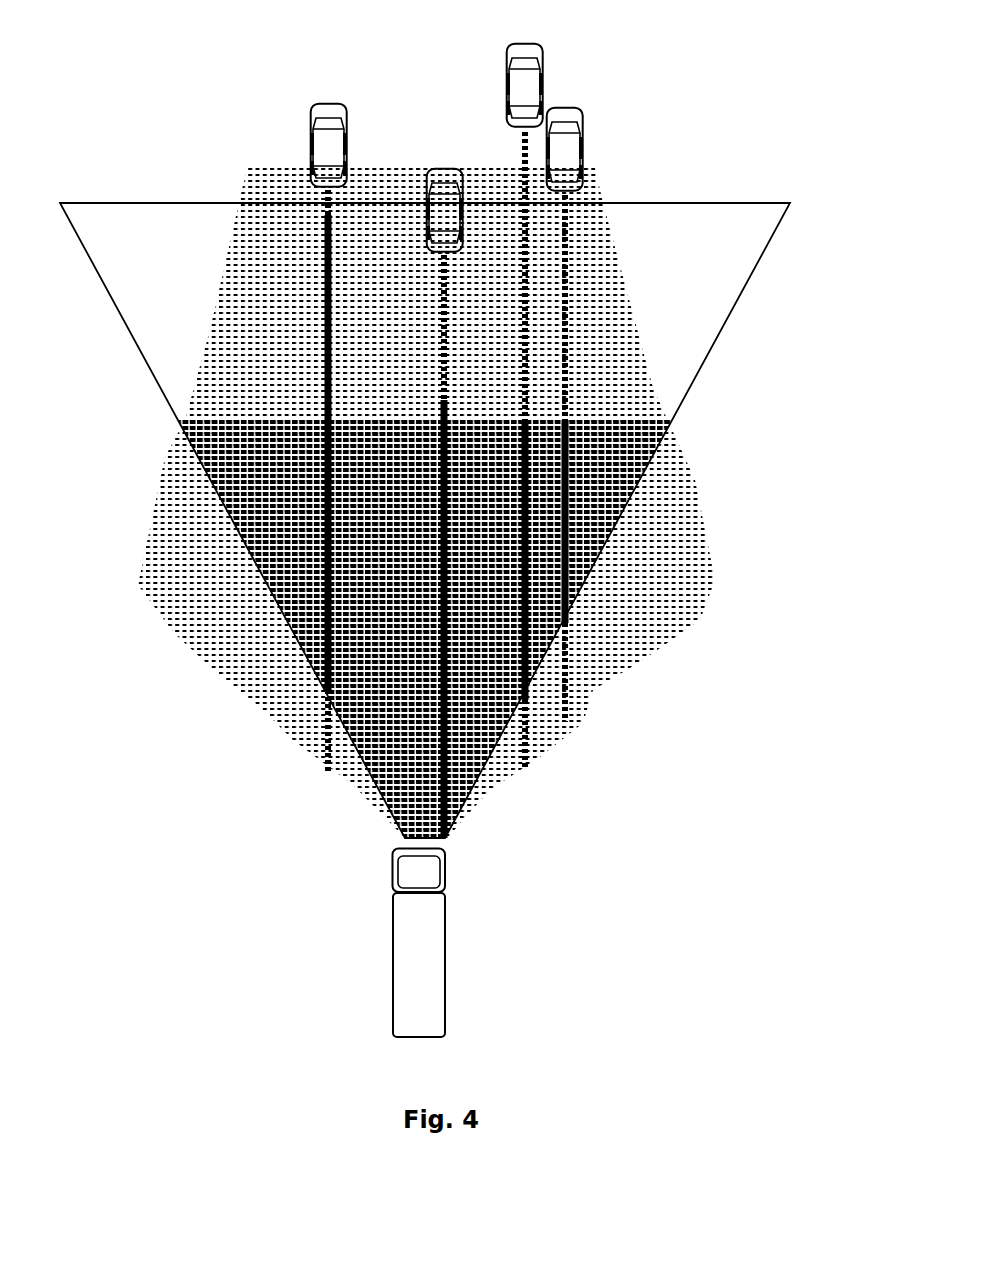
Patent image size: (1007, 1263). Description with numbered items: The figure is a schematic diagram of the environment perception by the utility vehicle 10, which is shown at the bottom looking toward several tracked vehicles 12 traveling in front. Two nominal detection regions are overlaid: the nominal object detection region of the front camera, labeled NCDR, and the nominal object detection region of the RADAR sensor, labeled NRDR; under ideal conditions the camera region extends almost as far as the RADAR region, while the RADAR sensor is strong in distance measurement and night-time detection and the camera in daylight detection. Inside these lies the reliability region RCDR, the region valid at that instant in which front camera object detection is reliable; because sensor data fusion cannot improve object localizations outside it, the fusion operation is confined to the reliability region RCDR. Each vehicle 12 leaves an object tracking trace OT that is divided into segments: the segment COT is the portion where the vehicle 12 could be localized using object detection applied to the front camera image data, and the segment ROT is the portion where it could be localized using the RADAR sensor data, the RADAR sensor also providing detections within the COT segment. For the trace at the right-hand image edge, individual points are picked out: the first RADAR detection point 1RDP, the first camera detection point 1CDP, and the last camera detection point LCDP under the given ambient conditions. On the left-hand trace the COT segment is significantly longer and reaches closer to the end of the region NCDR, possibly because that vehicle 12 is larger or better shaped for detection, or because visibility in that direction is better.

The utility vehicle 10 is at (393, 958).
The vehicle traveling in front 12 is at (333, 102).
The nominal object detection region of the front camera NCDR is at (717, 202).
The reliability region for the front camera RCDR is at (235, 420).
The nominal object detection region of the RADAR sensor NRDR is at (146, 542).
The camera object tracking trace segment COT is at (318, 237).
The RADAR object tracking trace segment ROT is at (523, 157).
The object tracking trace OT is at (563, 725).
The last camera detection point LCDP is at (580, 418).
The first camera detection point 1CDP is at (575, 622).
The first RADAR detection point 1RDP is at (580, 723).